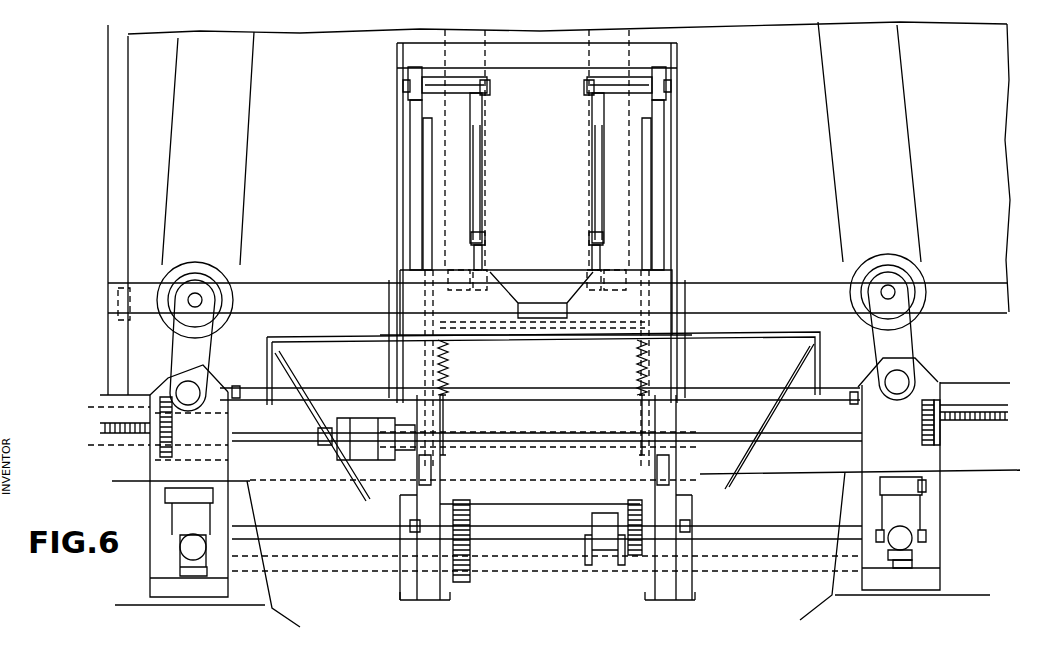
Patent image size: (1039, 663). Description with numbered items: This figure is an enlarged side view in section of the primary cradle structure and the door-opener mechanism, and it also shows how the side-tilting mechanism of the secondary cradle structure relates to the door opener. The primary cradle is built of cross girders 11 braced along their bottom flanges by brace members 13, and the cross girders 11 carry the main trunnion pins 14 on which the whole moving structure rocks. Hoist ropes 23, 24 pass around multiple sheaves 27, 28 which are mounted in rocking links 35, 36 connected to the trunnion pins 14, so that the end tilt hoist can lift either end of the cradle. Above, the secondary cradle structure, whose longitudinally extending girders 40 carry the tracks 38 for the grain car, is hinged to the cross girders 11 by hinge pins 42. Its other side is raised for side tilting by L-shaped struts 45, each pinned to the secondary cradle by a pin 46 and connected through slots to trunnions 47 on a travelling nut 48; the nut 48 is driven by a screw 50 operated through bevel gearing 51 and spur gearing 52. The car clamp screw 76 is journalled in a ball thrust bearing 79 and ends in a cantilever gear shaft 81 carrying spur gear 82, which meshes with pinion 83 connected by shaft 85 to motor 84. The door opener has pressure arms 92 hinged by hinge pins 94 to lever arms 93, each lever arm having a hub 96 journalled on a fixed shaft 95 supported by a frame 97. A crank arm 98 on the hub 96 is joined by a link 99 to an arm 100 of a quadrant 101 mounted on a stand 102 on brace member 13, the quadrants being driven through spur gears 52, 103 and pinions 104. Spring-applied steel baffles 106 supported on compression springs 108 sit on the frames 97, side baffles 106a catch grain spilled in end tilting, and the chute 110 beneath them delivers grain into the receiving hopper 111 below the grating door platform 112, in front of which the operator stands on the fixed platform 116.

The cross girder 11 is at (940, 556).
The brace member 13 is at (655, 603).
The main trunnion pin 14 is at (190, 381).
The rope 23 is at (246, 172).
The rope 24 is at (832, 128).
The multiple sheave 27 is at (200, 262).
The multiple sheave 28 is at (880, 254).
The rocking link 35 is at (175, 345).
The rocking link 36 is at (915, 337).
The tracks 38 is at (698, 395).
The longitudinally extending girder 40 is at (283, 482).
The hinge pin 42 is at (236, 392).
The L-shaped strut 45 is at (880, 502).
The pin 46 is at (926, 487).
The trunnion 47 is at (876, 535).
The travelling nut 48 is at (908, 527).
The screw 50 is at (912, 568).
The bevel gearing 51 is at (888, 560).
The spur gearing 52 is at (602, 513).
The screw 76 is at (990, 422).
The ball thrust bearing 79 is at (958, 424).
The cantilever gear shaft 81 is at (940, 445).
The spur gear 82 is at (935, 390).
The pinion 83 is at (920, 440).
The motor 84 is at (366, 418).
The shaft 85 is at (775, 441).
The pressure arm 92 is at (592, 256).
The lever arm 93 is at (592, 194).
The hinge pin 94 is at (589, 238).
The fixed shaft 95 is at (584, 88).
The hub 96 is at (620, 80).
The frame 97 is at (540, 43).
The crank arm 98 is at (408, 72).
The link 99 is at (416, 127).
The arm 100 is at (655, 470).
The quadrant 101 is at (655, 590).
The stand 102 is at (328, 580).
The spur gear 103 is at (630, 555).
The pinion 104 is at (410, 524).
The steel baffle 106 is at (425, 228).
The side baffle 106a is at (297, 380).
The compression spring 108 is at (637, 365).
The steel plate chute 110 is at (555, 492).
The receiving hopper 111 is at (302, 628).
The door platform 112 is at (575, 322).
The fixed platform 116 is at (730, 333).